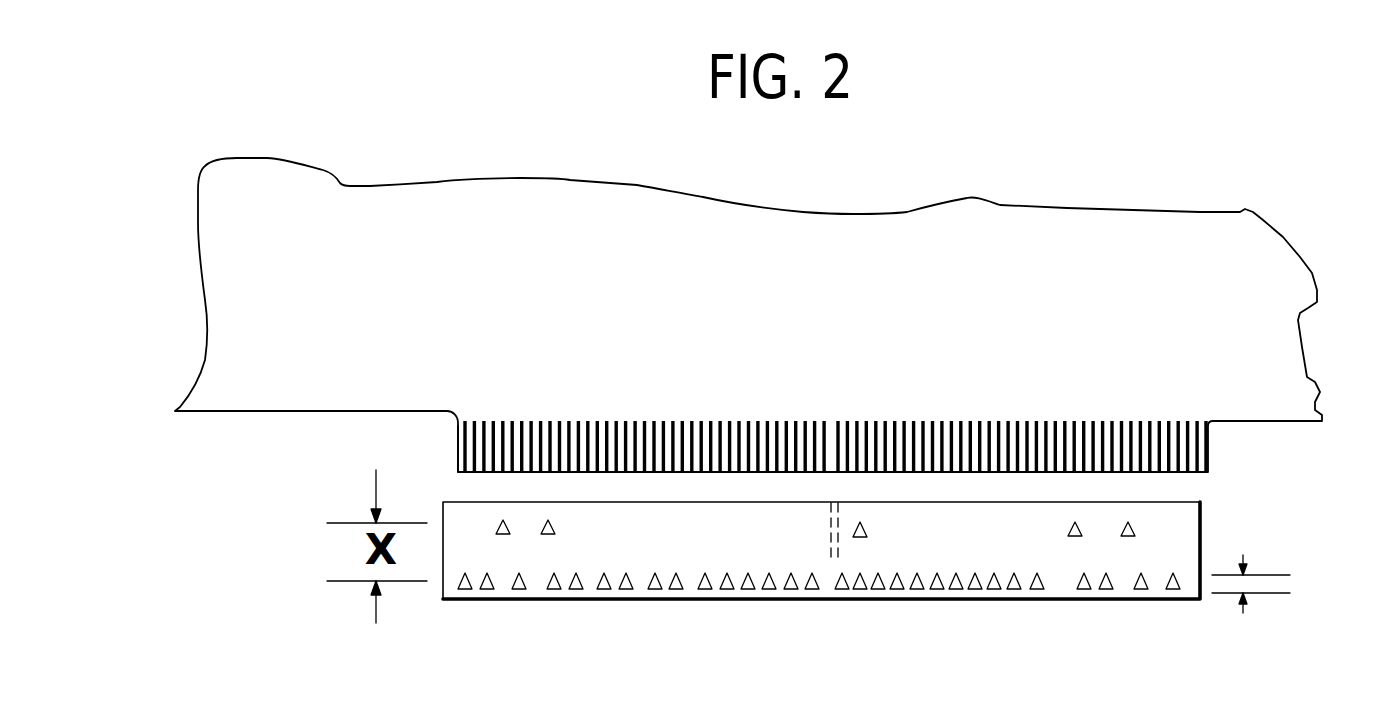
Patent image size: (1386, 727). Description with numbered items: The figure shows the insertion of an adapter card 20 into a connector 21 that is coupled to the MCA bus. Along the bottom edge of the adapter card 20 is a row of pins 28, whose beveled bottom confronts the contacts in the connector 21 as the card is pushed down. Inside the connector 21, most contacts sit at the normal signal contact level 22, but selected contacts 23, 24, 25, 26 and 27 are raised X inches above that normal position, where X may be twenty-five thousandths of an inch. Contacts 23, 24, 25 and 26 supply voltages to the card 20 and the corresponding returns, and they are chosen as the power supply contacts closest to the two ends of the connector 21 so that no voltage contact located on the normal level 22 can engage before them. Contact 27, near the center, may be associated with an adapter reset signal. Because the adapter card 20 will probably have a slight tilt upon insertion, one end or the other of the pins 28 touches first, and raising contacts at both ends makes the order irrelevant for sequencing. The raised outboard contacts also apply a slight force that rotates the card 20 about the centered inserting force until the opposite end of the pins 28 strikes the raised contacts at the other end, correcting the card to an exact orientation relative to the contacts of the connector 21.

The adapter card 20 is at (223, 307).
The connector 21 is at (1112, 602).
The normal signal contact level 22 is at (1278, 583).
The raised power supply contact 23 is at (504, 535).
The raised power supply contact 24 is at (550, 535).
The raised power supply contact 25 is at (1081, 527).
The raised power supply contact 26 is at (1136, 525).
The raised reset contact 27 is at (858, 539).
The pins 28 is at (457, 453).